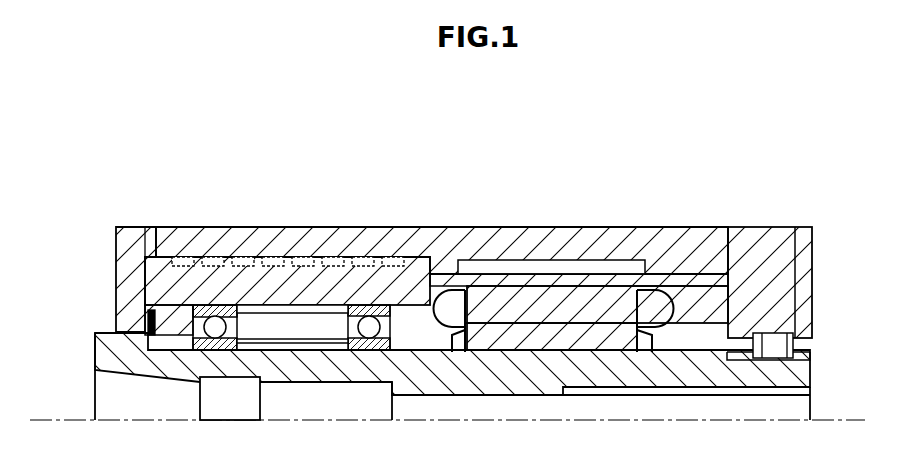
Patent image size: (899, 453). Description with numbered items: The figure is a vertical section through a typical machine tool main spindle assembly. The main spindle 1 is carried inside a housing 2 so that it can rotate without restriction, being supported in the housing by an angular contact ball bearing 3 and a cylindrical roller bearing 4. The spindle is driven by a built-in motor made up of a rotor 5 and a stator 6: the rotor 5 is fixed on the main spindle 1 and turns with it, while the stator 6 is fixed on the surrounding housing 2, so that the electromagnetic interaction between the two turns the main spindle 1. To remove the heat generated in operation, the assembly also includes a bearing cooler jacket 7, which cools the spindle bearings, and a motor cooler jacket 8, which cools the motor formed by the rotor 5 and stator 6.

The main spindle 1 is at (98, 333).
The housing 2 is at (764, 240).
The angular contact ball bearing 3 is at (207, 298).
The cylindrical roller bearing 4 is at (783, 328).
The rotor 5 is at (520, 338).
The stator 6 is at (545, 297).
The bearing cooler jacket 7 is at (300, 261).
The motor cooler jacket 8 is at (600, 267).